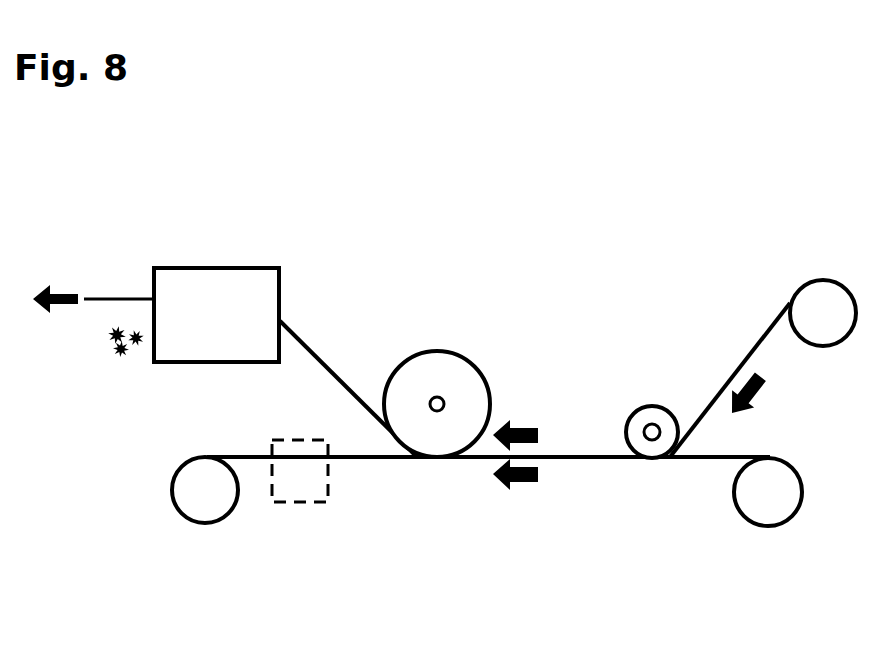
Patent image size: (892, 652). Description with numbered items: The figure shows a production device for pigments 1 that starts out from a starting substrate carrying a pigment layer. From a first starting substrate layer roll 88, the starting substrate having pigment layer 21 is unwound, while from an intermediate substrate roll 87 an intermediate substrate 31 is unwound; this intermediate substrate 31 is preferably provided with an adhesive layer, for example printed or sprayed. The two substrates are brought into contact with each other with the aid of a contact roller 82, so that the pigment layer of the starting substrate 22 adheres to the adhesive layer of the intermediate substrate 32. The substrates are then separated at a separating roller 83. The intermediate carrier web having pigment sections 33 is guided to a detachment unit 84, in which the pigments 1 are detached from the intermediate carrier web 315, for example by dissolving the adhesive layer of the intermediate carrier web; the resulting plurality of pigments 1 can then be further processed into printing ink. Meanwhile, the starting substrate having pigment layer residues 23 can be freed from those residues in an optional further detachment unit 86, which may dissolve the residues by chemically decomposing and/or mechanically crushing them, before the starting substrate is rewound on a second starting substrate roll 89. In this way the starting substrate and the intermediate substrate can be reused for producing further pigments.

The pigments 1 is at (100, 336).
The starting substrate having pigment layer 21 is at (705, 468).
The starting substrate 22 is at (585, 462).
The starting substrate having pigment layer residues 23 is at (368, 468).
The intermediate substrate 31 is at (718, 378).
The intermediate substrate 32 is at (575, 440).
The intermediate carrier web having pigment sections 33 is at (328, 360).
The contact roller 82 is at (643, 392).
The separating roller 83 is at (437, 350).
The detachment unit 84 is at (217, 250).
The further detachment unit 86 is at (285, 505).
The intermediate substrate roll 87 is at (823, 268).
The first starting substrate layer roll 88 is at (788, 532).
The second starting substrate roll 89 is at (197, 535).
The intermediate carrier web 315 is at (106, 290).